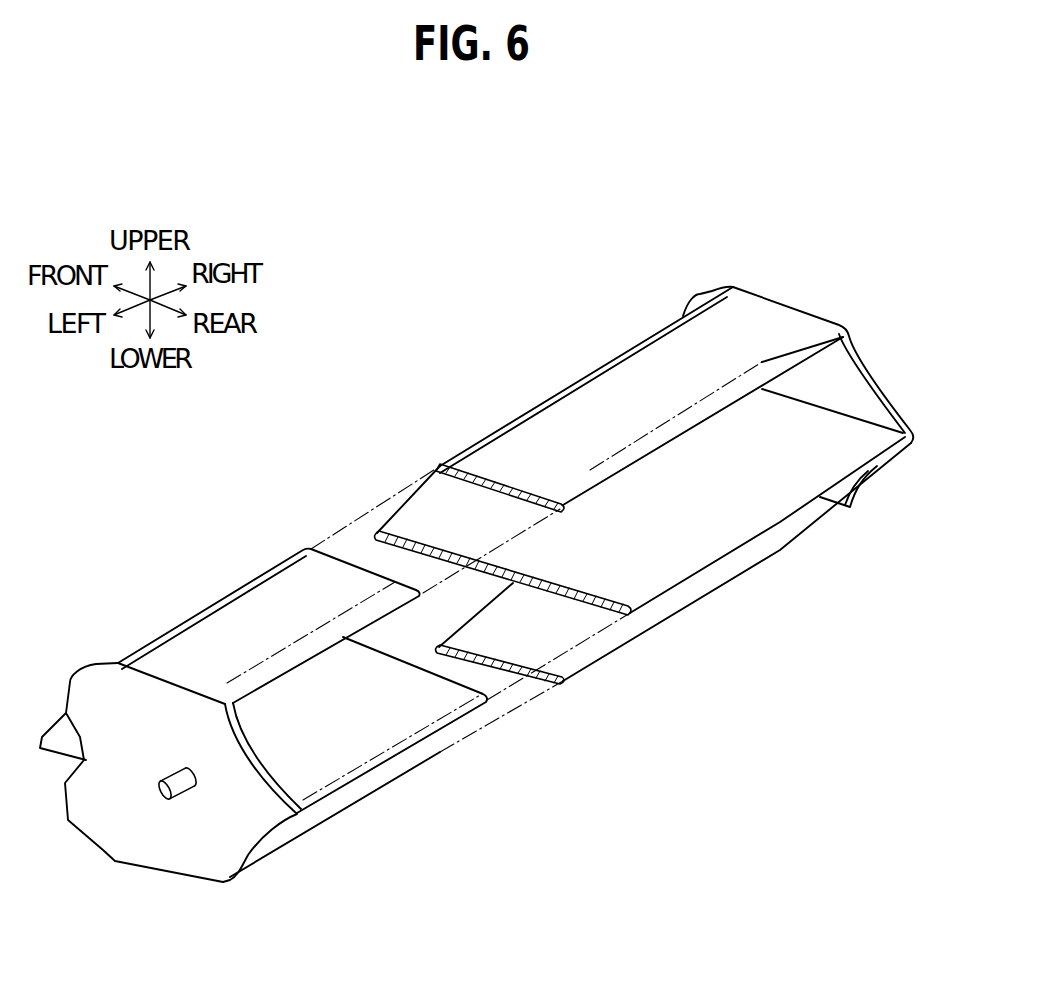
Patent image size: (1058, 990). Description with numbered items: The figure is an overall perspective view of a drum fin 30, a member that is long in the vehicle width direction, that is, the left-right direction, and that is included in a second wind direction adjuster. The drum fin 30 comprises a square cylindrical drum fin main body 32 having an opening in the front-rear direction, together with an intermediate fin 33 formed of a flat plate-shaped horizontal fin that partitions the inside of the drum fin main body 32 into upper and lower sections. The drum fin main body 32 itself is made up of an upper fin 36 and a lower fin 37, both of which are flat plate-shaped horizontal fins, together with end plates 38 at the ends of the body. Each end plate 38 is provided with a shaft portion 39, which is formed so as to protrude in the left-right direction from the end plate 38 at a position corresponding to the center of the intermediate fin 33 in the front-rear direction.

The drum fin 30 is at (483, 313).
The drum fin main body 32 is at (873, 379).
The intermediate fin 33 is at (843, 450).
The upper fin 36 is at (502, 463).
The lower fin 37 is at (578, 658).
The end plate 38 is at (123, 720).
The shaft portion 39 is at (167, 792).